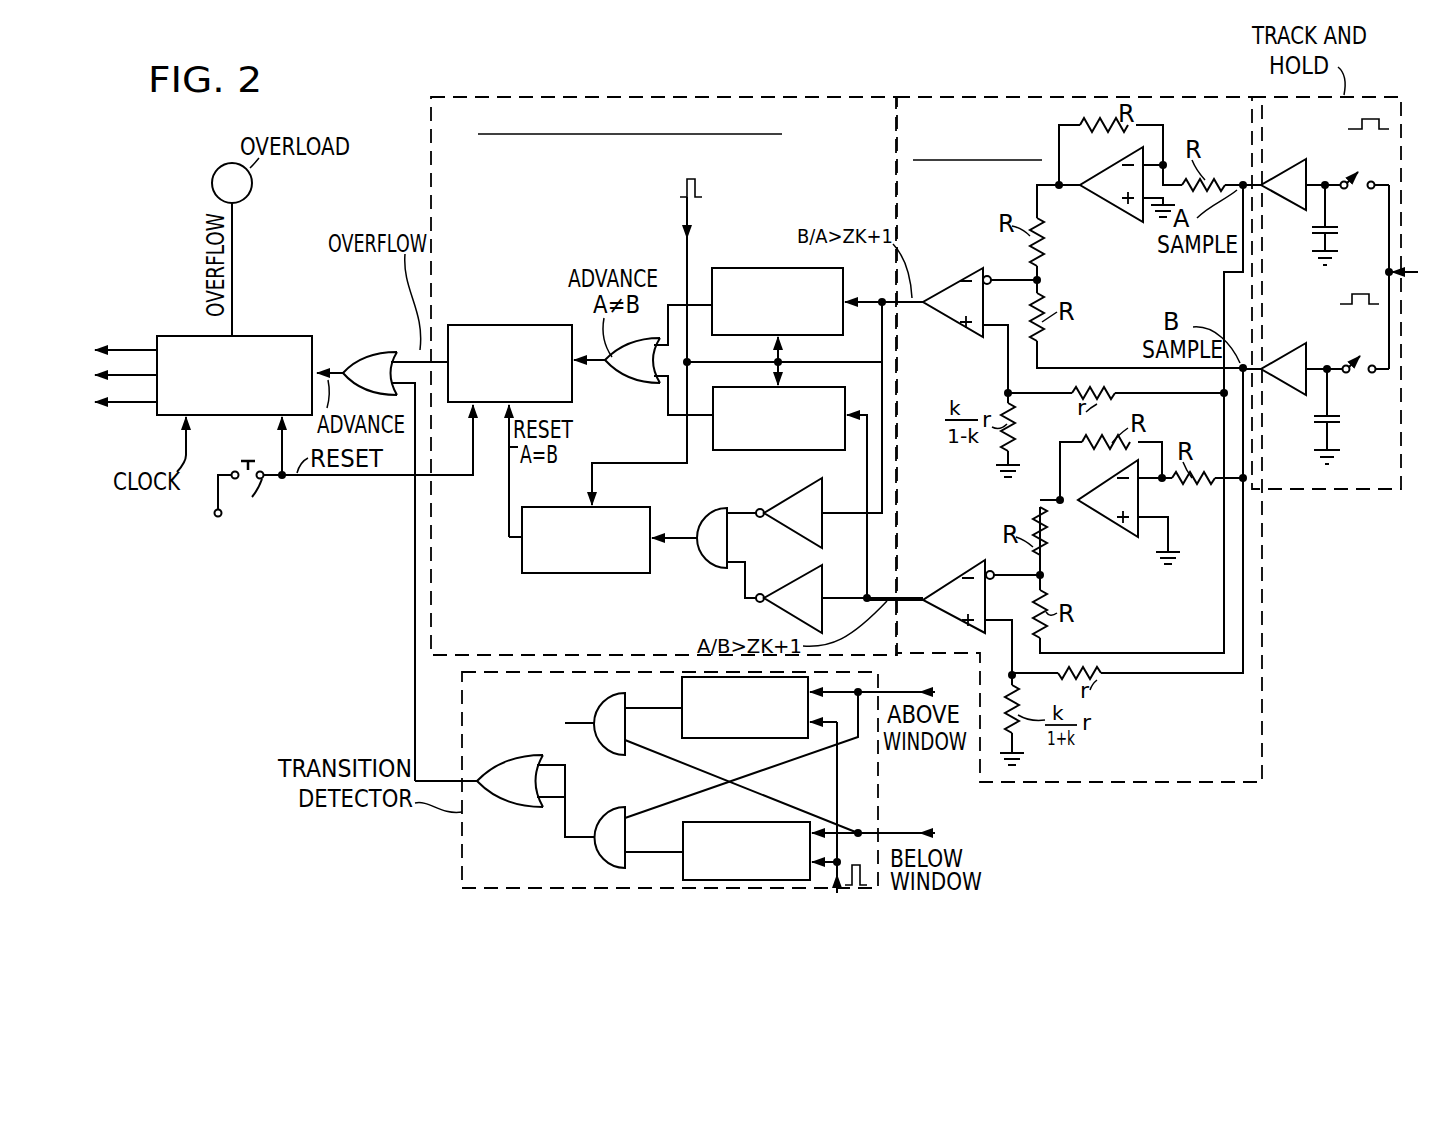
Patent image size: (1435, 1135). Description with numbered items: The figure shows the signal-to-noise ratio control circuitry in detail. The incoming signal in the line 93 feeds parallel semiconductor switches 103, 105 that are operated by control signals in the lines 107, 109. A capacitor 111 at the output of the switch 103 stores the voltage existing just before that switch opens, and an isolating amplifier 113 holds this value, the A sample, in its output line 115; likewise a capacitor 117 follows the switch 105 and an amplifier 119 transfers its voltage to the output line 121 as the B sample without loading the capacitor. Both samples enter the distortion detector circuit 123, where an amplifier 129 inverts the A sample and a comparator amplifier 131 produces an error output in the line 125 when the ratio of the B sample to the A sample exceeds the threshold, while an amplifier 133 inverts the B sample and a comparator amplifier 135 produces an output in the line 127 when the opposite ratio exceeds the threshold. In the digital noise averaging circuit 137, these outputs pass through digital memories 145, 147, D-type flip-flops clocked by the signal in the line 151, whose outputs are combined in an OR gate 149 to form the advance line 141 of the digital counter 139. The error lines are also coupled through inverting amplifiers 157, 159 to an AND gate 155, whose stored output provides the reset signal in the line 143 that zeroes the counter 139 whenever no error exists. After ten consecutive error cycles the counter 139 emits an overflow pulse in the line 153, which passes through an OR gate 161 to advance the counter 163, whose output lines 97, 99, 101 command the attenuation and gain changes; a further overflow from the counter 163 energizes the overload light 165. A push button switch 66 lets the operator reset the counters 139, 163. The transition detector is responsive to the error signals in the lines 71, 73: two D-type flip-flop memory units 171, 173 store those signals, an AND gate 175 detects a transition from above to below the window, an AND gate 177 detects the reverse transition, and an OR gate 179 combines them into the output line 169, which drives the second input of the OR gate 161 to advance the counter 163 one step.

The push button switch 66 is at (246, 500).
The error signal line 71 is at (920, 691).
The error signal line 73 is at (920, 833).
The line 93 is at (1403, 270).
The output line 97 is at (112, 349).
The output line 99 is at (140, 374).
The output line 101 is at (113, 403).
The semiconductor switch 103 is at (1346, 216).
The semiconductor switch 105 is at (1353, 407).
The control signal line 107 is at (1344, 165).
The control signal line 109 is at (1346, 348).
The capacitor 111 is at (1312, 231).
The isolating amplifier 113 is at (1303, 172).
The output line 115 is at (1264, 192).
The capacitor 117 is at (1314, 421).
The amplifier 119 is at (1303, 357).
The output line 121 is at (1266, 378).
The distortion detector circuit 123 is at (997, 96).
The error output line 125 is at (915, 305).
The error output line 127 is at (917, 603).
The amplifier 129 is at (1110, 197).
The comparator amplifier 131 is at (966, 268).
The amplifier 133 is at (1112, 510).
The comparator amplifier 135 is at (962, 572).
The digital noise averaging circuit 137 is at (737, 97).
The digital counter 139 is at (500, 325).
The line 141 is at (597, 367).
The reset signal line 143 is at (510, 512).
The digital memory 145 is at (745, 268).
The digital memory 147 is at (805, 387).
The OR gate 149 is at (645, 379).
The clock signal line 151 is at (685, 236).
The line 153 is at (421, 362).
The AND gate 155 is at (703, 557).
The inverting amplifier 157 is at (800, 487).
The inverting amplifier 159 is at (800, 574).
The OR gate 161 is at (365, 350).
The counter 163 is at (273, 336).
The overload light 165 is at (212, 185).
The output line 169 is at (415, 660).
The D-type flip-flop memory unit 171 is at (682, 690).
The D-type flip-flop memory unit 173 is at (773, 822).
The AND gate 175 is at (597, 712).
The AND gate 177 is at (597, 848).
The OR gate 179 is at (502, 755).